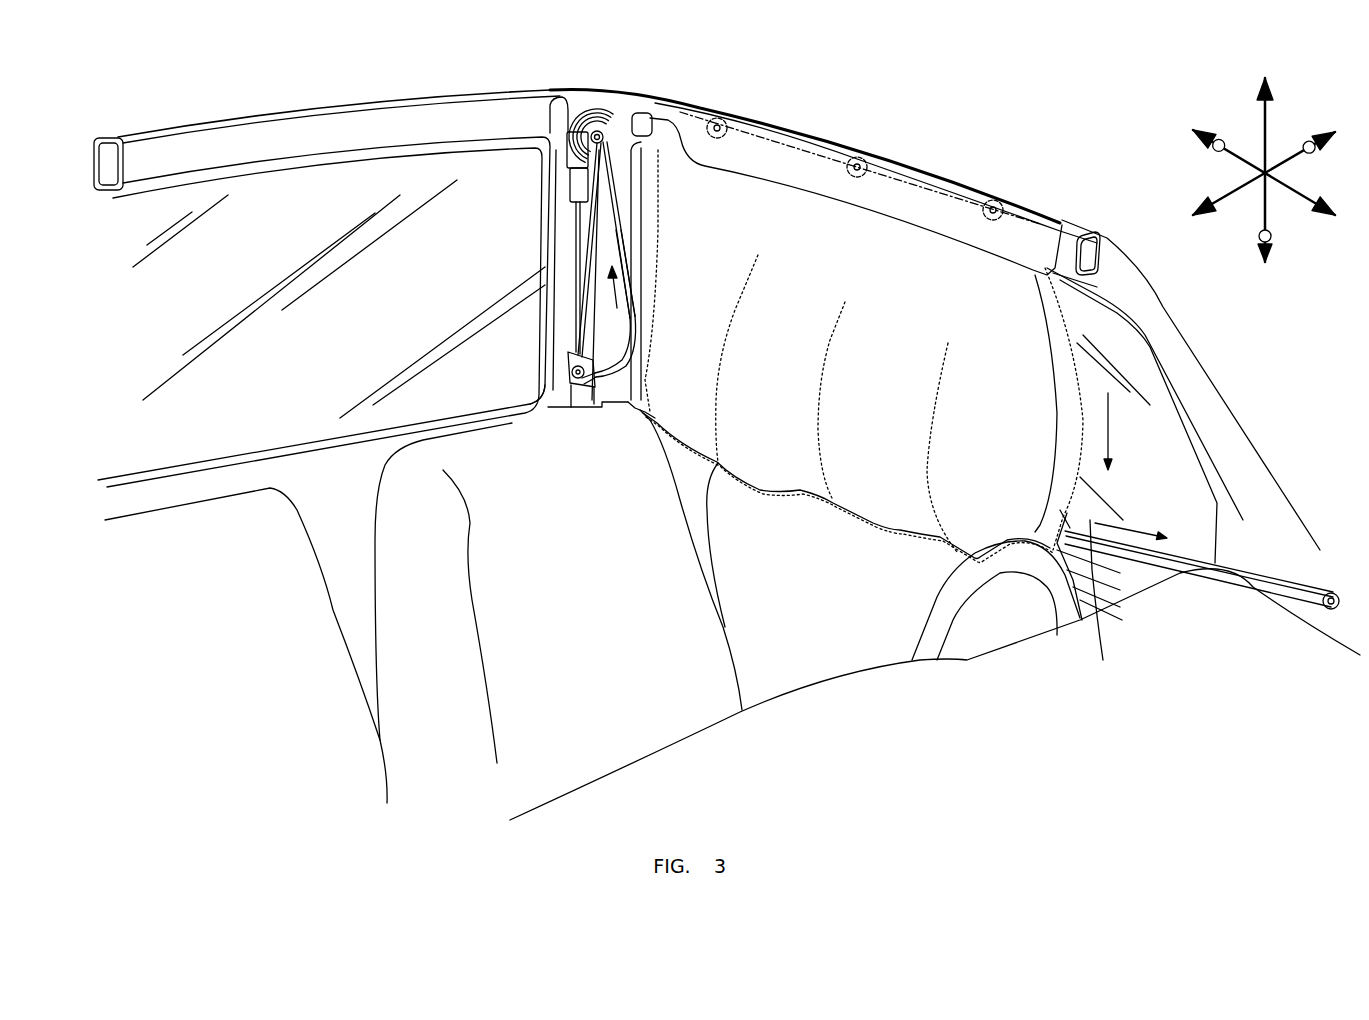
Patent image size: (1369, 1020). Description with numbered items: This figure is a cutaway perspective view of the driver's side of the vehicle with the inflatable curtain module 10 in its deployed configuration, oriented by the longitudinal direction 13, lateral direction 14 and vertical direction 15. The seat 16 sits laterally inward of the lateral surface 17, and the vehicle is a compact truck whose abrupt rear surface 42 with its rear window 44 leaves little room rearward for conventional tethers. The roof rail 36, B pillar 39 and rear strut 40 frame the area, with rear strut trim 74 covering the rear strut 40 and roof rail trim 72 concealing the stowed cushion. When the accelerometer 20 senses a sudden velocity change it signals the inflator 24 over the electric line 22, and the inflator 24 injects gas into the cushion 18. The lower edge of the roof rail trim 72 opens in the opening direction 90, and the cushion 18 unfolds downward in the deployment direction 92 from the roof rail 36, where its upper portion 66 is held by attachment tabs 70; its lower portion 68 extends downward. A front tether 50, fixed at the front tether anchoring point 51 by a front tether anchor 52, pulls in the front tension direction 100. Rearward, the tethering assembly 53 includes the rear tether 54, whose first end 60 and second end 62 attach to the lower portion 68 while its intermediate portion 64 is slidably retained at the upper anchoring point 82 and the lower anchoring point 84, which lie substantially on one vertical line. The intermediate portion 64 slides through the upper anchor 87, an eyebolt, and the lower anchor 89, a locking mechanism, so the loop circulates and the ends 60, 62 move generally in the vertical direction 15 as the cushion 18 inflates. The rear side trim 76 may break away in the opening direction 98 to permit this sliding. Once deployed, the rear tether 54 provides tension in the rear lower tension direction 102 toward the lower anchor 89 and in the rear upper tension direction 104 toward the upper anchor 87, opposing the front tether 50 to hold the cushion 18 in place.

The inflatable curtain module 10 is at (943, 145).
The longitudinal direction 13 is at (1240, 152).
The lateral direction 14 is at (1297, 160).
The vertical direction 15 is at (1268, 135).
The seat 16 is at (561, 621).
The lateral surface 17 is at (1163, 445).
The cushion 18 is at (868, 405).
The accelerometer 20 is at (570, 184).
The electric line 22 is at (588, 114).
The inflator 24 is at (645, 113).
The roof rail 36 is at (1070, 224).
The B pillar 39 is at (548, 329).
The rear strut 40 is at (287, 115).
The abrupt rear surface 42 is at (80, 212).
The rear window 44 is at (318, 330).
The front tether 50 is at (1140, 560).
The front tether anchoring point 51 is at (1331, 575).
The front tether anchor 52 is at (1321, 610).
The tethering assembly 53 is at (640, 248).
The rear tether 54 is at (580, 223).
The first end 60 is at (628, 367).
The second end 62 is at (638, 341).
The intermediate portion 64 is at (623, 292).
The upper portion 66 is at (1060, 323).
The lower portion 68 is at (1103, 660).
The attachment tabs 70 is at (722, 120).
The roof rail trim 72 is at (1013, 252).
The rear strut trim 74 is at (460, 102).
The rear side trim 76 is at (552, 397).
The upper anchoring point 82 is at (601, 132).
The lower anchoring point 84 is at (557, 365).
The upper anchor 87 is at (592, 124).
The lower anchor 89 is at (575, 385).
The opening direction 90 is at (1030, 313).
The deployment direction 92 is at (1107, 432).
The opening direction 98 is at (630, 193).
The front tension direction 100 is at (1127, 520).
The rear lower tension direction 102 is at (608, 388).
The rear upper tension direction 104 is at (612, 288).